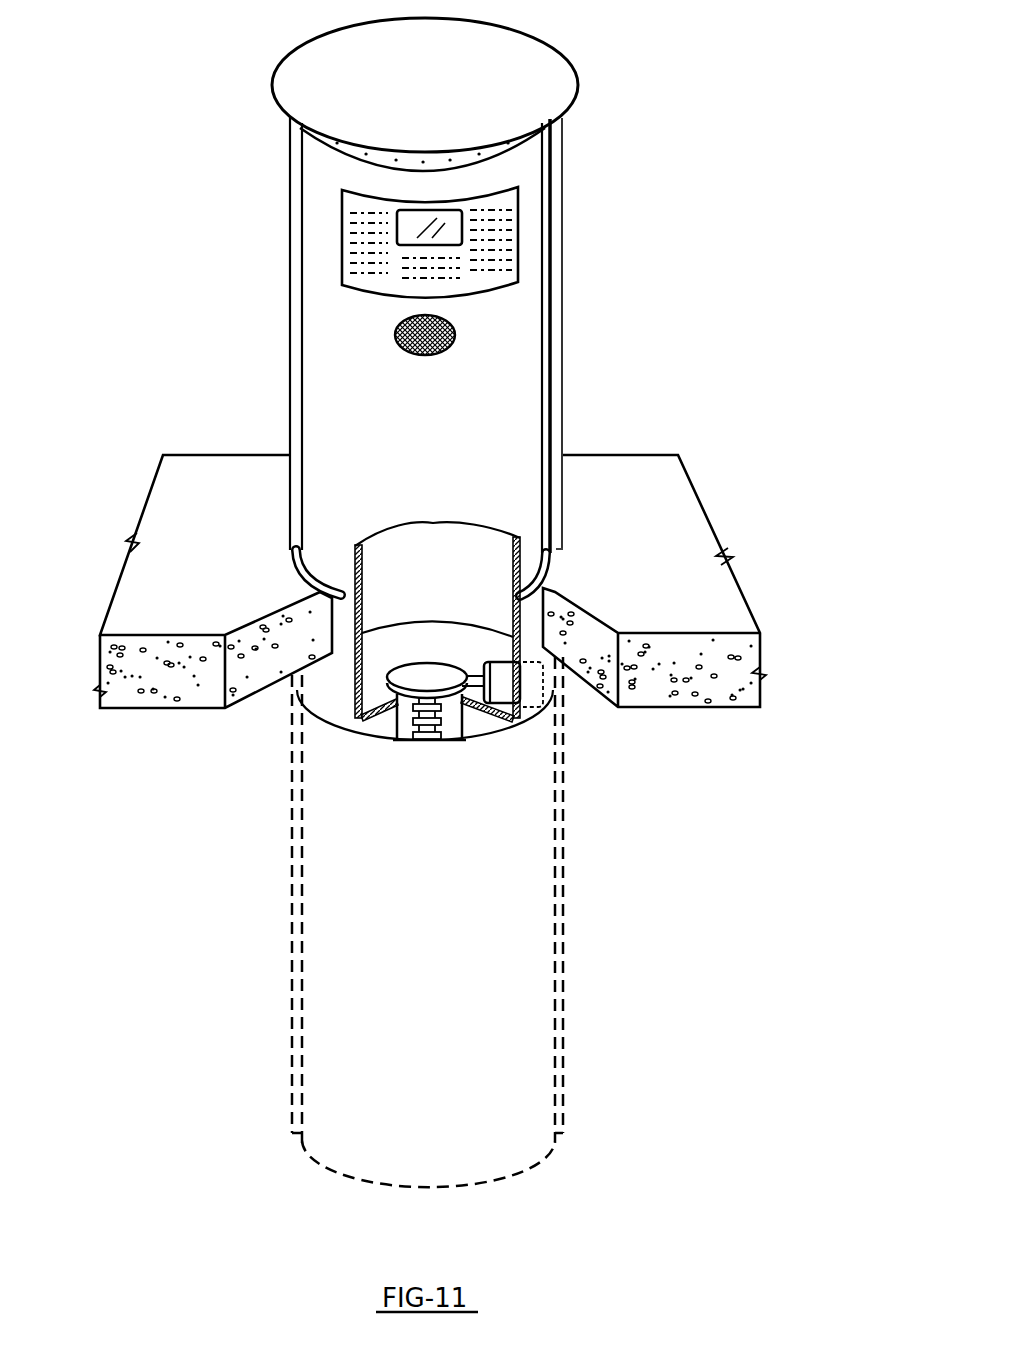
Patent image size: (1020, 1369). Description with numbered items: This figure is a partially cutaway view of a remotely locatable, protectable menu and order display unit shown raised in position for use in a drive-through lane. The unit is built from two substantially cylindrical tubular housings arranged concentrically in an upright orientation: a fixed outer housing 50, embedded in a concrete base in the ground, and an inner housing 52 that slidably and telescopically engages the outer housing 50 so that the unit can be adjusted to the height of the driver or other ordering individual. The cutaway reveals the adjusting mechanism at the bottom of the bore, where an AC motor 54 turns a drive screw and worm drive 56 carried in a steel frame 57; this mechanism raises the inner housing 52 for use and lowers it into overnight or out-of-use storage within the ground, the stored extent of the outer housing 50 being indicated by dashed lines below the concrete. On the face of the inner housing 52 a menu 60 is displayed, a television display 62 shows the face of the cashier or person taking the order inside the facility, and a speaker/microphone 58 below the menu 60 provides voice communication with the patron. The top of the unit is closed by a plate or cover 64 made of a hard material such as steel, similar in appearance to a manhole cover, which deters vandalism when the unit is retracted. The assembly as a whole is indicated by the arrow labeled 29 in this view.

The plate or cover 64 is at (530, 68).
The menu 60 is at (375, 250).
The television display 62 is at (453, 227).
The speaker/microphone 58 is at (453, 333).
The inner housing 52 is at (335, 398).
The outer housing 50 is at (563, 902).
The AC motor 54 is at (507, 682).
The drive screw and worm drive 56 is at (421, 721).
The steel frame 57 is at (395, 723).
The column 29 is at (603, 997).